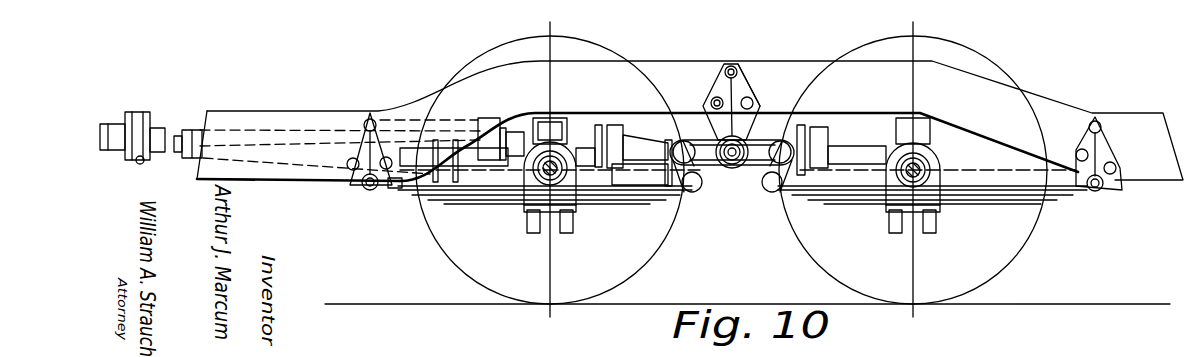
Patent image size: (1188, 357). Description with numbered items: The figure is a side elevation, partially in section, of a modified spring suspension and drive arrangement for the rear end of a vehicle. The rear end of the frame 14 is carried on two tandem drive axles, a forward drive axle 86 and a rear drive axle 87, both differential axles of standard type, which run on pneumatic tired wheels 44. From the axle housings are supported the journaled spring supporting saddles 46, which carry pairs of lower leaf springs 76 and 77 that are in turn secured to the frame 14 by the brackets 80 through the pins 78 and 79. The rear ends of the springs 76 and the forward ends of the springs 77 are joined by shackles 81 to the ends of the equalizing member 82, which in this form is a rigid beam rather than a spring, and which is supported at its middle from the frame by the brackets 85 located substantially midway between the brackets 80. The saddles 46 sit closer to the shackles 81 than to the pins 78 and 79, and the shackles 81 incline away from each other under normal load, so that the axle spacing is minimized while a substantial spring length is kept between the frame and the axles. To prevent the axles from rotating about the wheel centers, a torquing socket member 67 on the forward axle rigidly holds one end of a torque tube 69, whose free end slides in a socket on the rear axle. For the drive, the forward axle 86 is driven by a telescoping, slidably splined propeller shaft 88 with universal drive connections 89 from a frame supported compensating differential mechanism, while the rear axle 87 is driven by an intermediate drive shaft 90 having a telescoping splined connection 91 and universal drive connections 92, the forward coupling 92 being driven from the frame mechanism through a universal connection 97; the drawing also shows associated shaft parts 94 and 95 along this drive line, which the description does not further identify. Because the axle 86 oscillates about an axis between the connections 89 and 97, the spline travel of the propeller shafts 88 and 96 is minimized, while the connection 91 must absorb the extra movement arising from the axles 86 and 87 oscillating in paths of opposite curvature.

The frame 14 is at (402, 108).
The pneumatic tired wheels 44 is at (618, 58).
The spring supporting saddles 46 is at (584, 126).
The torquing socket member 67 is at (636, 196).
The torque tube 69 is at (738, 192).
The lower leaf springs 76 is at (470, 206).
The lower leaf springs 77 is at (995, 206).
The pin 78 is at (356, 188).
The pin 79 is at (1099, 195).
The brackets 80 is at (368, 116).
The shackles 81 is at (692, 192).
The equalizing member 82 is at (712, 120).
The brackets 85 is at (748, 100).
The forward drive axle 86 is at (524, 226).
The rear drive axle 87 is at (876, 220).
The propeller shaft 88 is at (186, 160).
The universal drive connections 89 is at (140, 162).
The intermediate drive shaft 90 is at (724, 108).
The telescoping slidably splined connection 91 is at (710, 112).
The universal drive connections 92 is at (624, 128).
The bearing collar 94 is at (556, 120).
The shaft bearing 95 is at (478, 148).
The propeller shaft 96 is at (297, 123).
The universal connection 97 is at (148, 128).